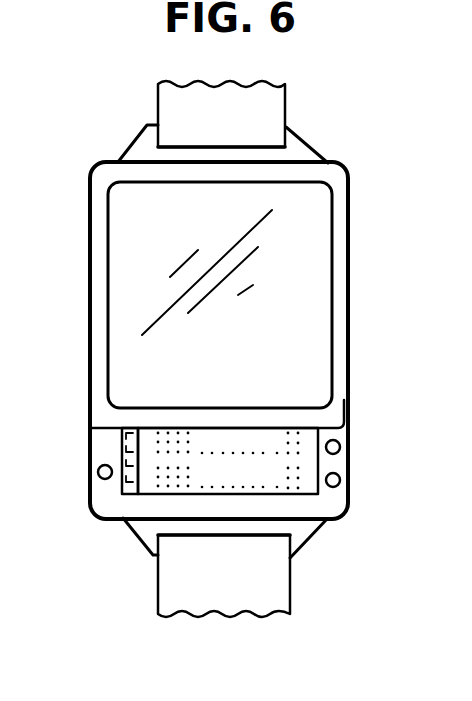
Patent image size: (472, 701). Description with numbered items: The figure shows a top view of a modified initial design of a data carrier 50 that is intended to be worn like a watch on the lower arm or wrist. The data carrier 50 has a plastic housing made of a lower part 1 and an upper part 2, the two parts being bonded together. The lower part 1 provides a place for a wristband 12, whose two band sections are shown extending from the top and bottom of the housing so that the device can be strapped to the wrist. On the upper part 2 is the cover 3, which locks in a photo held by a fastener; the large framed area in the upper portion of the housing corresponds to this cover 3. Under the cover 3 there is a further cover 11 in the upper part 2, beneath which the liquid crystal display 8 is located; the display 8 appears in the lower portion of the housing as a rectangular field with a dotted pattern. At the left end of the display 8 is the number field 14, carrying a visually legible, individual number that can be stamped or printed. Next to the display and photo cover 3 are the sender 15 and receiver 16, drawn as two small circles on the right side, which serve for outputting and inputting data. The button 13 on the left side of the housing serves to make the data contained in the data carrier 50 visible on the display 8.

The lower part 1 is at (303, 148).
The upper part 2 is at (340, 181).
The cover 3 is at (313, 241).
The liquid crystal display 8 is at (232, 487).
The cover 11 is at (298, 478).
The wristband 12 is at (272, 108).
The button 13 is at (98, 472).
The number field 14 is at (123, 448).
The sender 15 is at (340, 446).
The receiver 16 is at (340, 480).
The data carrier 50 is at (302, 335).